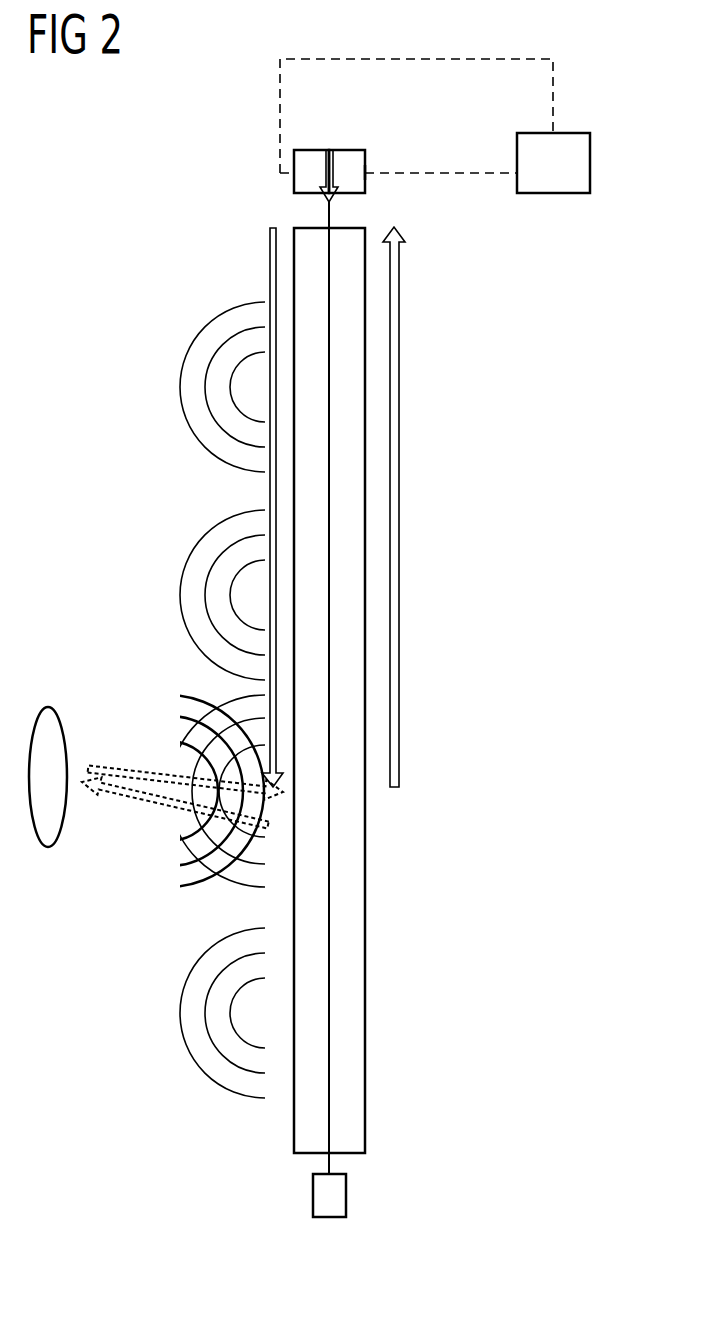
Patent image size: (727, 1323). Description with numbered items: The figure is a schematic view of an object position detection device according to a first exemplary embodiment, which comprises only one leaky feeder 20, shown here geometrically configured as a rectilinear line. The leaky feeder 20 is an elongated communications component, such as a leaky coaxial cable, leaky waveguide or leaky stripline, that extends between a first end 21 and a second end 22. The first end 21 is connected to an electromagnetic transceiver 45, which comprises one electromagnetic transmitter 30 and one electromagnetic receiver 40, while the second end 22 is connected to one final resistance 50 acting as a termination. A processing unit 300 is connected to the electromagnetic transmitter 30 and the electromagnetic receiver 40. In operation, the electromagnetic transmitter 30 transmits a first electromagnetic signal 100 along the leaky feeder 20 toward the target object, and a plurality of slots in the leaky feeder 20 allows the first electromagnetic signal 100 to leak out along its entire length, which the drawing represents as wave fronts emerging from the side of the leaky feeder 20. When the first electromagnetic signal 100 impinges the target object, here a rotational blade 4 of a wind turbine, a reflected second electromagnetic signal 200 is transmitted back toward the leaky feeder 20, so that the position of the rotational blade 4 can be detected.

The rotational blade 4 is at (45, 707).
The leaky feeder 20 is at (330, 253).
The first end 21 is at (329, 210).
The second end 22 is at (333, 1163).
The electromagnetic transmitter 30 is at (310, 162).
The electromagnetic receiver 40 is at (352, 162).
The electromagnetic transceiver 45 is at (366, 160).
The final resistance 50 is at (346, 1207).
The first electromagnetic signal 100 is at (225, 314).
The second electromagnetic signal 200 is at (181, 697).
The processing unit 300 is at (553, 193).